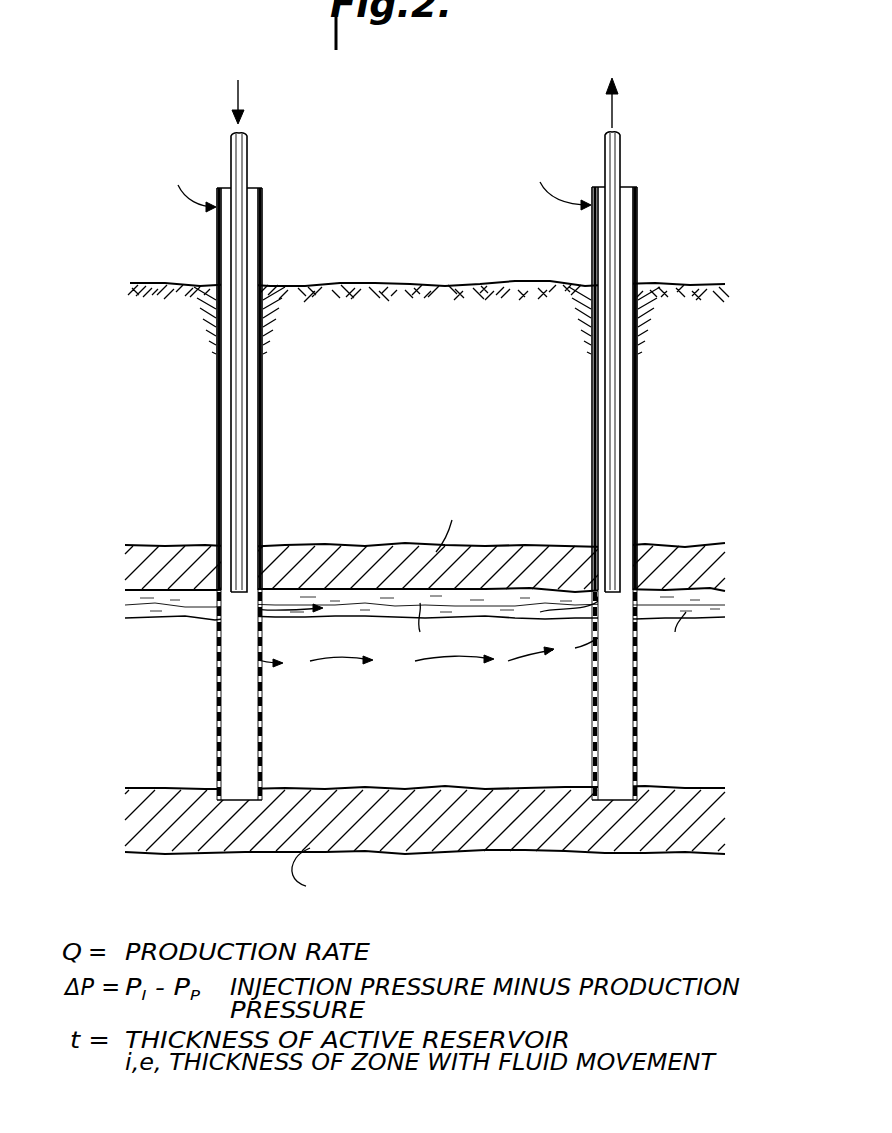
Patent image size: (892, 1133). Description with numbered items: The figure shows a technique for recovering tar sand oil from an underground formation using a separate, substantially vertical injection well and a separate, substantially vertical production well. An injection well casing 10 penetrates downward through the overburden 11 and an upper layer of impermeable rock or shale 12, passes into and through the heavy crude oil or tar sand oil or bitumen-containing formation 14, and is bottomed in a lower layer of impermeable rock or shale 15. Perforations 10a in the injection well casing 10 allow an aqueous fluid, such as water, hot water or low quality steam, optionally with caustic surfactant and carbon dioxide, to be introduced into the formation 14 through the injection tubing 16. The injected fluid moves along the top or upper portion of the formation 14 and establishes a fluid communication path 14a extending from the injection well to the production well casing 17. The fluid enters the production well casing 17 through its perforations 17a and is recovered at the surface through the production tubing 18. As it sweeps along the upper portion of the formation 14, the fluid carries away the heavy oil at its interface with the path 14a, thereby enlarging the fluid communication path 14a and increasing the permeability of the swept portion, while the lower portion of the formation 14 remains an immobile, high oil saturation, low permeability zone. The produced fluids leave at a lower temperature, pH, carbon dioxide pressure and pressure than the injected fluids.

The injection well casing 10 is at (174, 478).
The perforations 10a is at (216, 643).
The overburden 11 is at (425, 381).
The impermeable rock or shale 12 is at (518, 528).
The heavy crude oil or tar sand oil or bitumen-containing formation 14 is at (171, 727).
The fluid communication path 14a is at (135, 607).
The impermeable rock or shale 15 is at (668, 795).
The injection tubing 16 is at (248, 155).
The production well casing 17 is at (534, 476).
The perforations 17a is at (637, 715).
The production tubing 18 is at (622, 157).